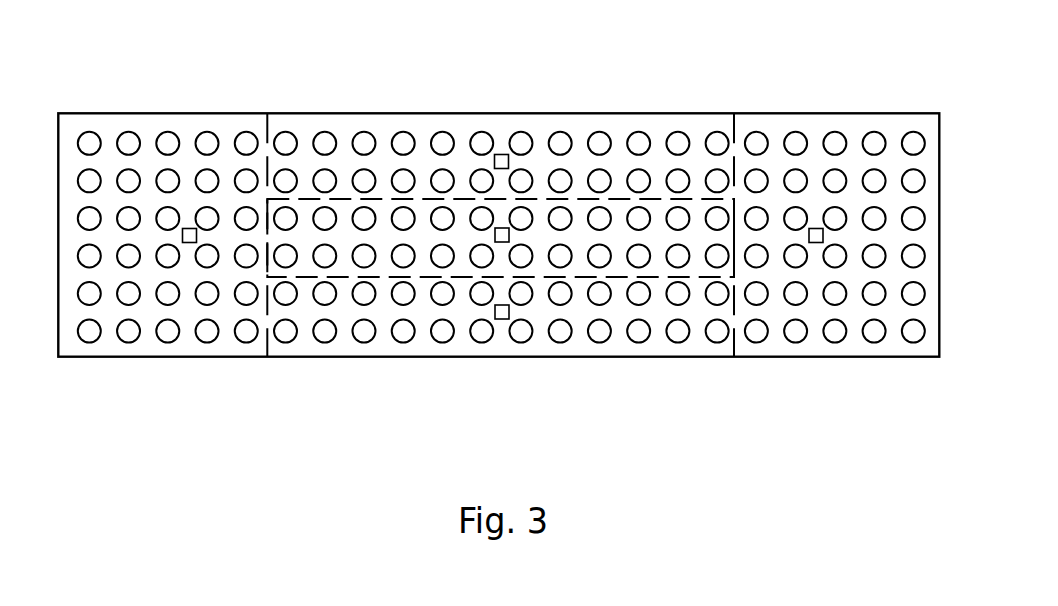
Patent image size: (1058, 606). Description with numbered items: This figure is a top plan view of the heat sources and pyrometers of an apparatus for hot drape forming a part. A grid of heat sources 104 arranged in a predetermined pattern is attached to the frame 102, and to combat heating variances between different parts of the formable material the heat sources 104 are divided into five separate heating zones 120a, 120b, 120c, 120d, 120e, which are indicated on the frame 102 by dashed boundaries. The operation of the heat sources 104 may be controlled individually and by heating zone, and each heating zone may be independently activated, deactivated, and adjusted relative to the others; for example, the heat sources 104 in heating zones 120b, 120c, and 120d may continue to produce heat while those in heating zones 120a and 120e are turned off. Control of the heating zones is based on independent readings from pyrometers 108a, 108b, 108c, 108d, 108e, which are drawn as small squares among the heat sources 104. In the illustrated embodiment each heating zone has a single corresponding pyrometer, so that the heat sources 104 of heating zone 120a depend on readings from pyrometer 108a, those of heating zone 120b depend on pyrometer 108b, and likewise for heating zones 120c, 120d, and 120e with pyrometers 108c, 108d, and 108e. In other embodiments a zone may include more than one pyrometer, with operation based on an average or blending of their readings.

The frame 102 is at (668, 122).
The heat source 104 is at (207, 178).
The pyrometer 108a is at (197, 235).
The pyrometer 108b is at (501, 154).
The pyrometer 108c is at (507, 228).
The pyrometer 108d is at (509, 308).
The pyrometer 108e is at (823, 237).
The heating zone 120a is at (162, 356).
The heating zone 120b is at (456, 118).
The heating zone 120c is at (621, 210).
The heating zone 120d is at (670, 351).
The heating zone 120e is at (824, 356).